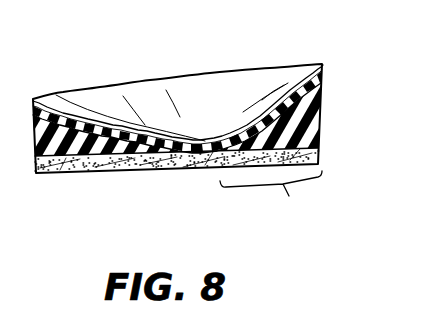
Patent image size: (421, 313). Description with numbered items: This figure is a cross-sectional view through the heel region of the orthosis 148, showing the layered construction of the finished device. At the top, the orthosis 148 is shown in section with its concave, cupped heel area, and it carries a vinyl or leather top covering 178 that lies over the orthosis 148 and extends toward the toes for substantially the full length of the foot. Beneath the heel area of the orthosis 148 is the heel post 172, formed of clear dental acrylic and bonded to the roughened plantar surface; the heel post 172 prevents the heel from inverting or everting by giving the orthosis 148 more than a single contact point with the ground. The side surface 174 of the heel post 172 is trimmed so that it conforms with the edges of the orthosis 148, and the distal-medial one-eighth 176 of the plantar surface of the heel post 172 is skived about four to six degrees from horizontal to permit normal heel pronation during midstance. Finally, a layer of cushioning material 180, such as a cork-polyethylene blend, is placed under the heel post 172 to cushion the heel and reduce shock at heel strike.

The orthosis 148 is at (310, 83).
The heel post 172 is at (78, 147).
The side surface 174 is at (322, 115).
The distal-medial one-eighth 176 is at (271, 199).
The top covering 178 is at (143, 137).
The layer of cushioning material 180 is at (160, 158).